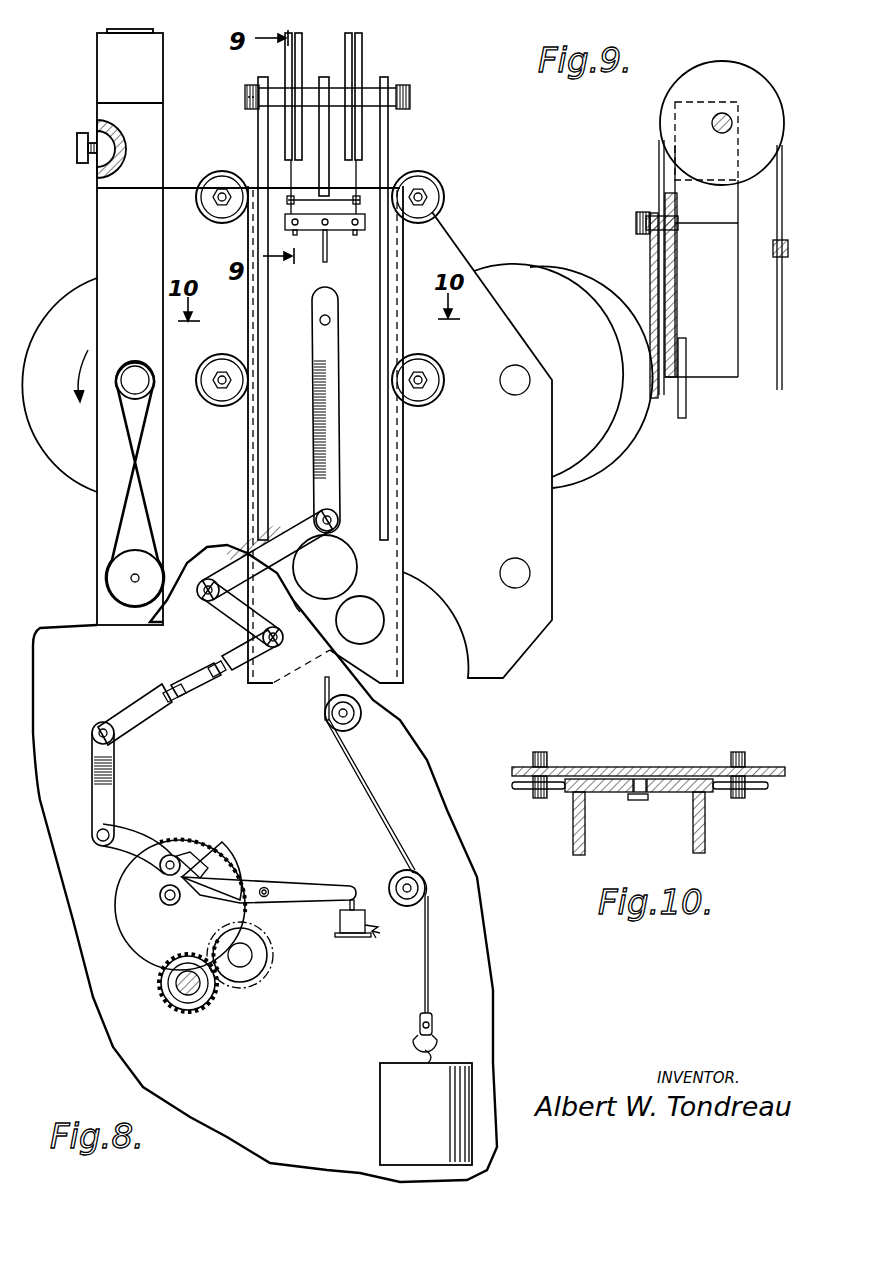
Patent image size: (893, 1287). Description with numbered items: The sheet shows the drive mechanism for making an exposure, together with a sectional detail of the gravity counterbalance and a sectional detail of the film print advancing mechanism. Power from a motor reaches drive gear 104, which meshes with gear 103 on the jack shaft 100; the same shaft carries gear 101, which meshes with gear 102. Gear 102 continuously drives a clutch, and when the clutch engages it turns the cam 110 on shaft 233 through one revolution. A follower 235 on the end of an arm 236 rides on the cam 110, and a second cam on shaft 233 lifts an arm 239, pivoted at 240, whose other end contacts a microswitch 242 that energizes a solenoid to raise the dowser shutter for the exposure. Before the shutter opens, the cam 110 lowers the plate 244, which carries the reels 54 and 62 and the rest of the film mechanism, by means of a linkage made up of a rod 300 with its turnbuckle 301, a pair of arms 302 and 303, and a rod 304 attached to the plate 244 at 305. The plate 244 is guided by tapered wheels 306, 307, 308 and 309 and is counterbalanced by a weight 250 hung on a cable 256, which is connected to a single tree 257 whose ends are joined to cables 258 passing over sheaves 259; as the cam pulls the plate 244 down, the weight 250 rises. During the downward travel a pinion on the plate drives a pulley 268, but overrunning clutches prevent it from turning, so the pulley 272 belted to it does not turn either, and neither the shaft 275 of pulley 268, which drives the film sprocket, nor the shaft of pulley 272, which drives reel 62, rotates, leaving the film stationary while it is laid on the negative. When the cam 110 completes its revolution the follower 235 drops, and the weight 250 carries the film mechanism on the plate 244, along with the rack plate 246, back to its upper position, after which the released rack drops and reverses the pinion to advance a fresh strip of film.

In FIG. 8, the reel 54 is at (575, 296).
In FIG. 9, the reel 54 is at (576, 297).
In FIG. 8, the reel 62 is at (63, 462).
In FIG. 8, the jack shaft 100 is at (246, 960).
In FIG. 8, the gear 101 is at (268, 956).
In FIG. 8, the gear 102 is at (172, 842).
In FIG. 8, the gear 103 is at (262, 930).
In FIG. 8, the drive gear 104 is at (205, 1010).
In FIG. 8, the cam 110 is at (232, 868).
In FIG. 8, the shaft 233 is at (172, 902).
In FIG. 8, the follower 235 is at (197, 858).
In FIG. 8, the arm 236 is at (138, 832).
In FIG. 8, the arm 239 is at (263, 887).
In FIG. 8, the pivot 240 is at (266, 886).
In FIG. 8, the microswitch 242 is at (352, 935).
In FIG. 8, the plate 244 is at (540, 527).
In FIG. 9, the plate 244 is at (656, 400).
In FIG. 10, the plate 244 is at (593, 767).
In FIG. 10, the rack plate 246 is at (680, 780).
In FIG. 8, the weight 250 is at (398, 1100).
In FIG. 8, the cable 256 is at (323, 258).
In FIG. 9, the cable 256 is at (778, 365).
In FIG. 8, the single tree 257 is at (337, 228).
In FIG. 9, the single tree 257 is at (776, 254).
In FIG. 8, the cables 258 is at (357, 172).
In FIG. 9, the cables 258 is at (659, 184).
In FIG. 8, the sheaves 259 is at (286, 60).
In FIG. 9, the sheaves 259 is at (748, 75).
In FIG. 8, the pulley 268 is at (120, 578).
In FIG. 8, the pulley 272 is at (150, 372).
In FIG. 8, the shaft 275 is at (150, 510).
In FIG. 8, the rod 300 is at (145, 728).
In FIG. 8, the turnbuckle 301 is at (197, 690).
In FIG. 8, the arm 302 is at (238, 623).
In FIG. 8, the arm 303 is at (282, 536).
In FIG. 8, the rod 304 is at (320, 410).
In FIG. 9, the rod 304 is at (686, 414).
In FIG. 10, the rod 304 is at (638, 801).
In FIG. 8, the attachment point 305 is at (328, 316).
In FIG. 9, the attachment point 305 is at (674, 334).
In FIG. 10, the attachment point 305 is at (639, 778).
In FIG. 8, the tapered wheel 306 is at (225, 222).
In FIG. 8, the tapered wheel 307 is at (437, 185).
In FIG. 9, the tapered wheel 307 is at (650, 210).
In FIG. 8, the tapered wheel 308 is at (222, 400).
In FIG. 10, the tapered wheel 308 is at (522, 789).
In FIG. 8, the tapered wheel 309 is at (420, 400).
In FIG. 10, the tapered wheel 309 is at (757, 789).